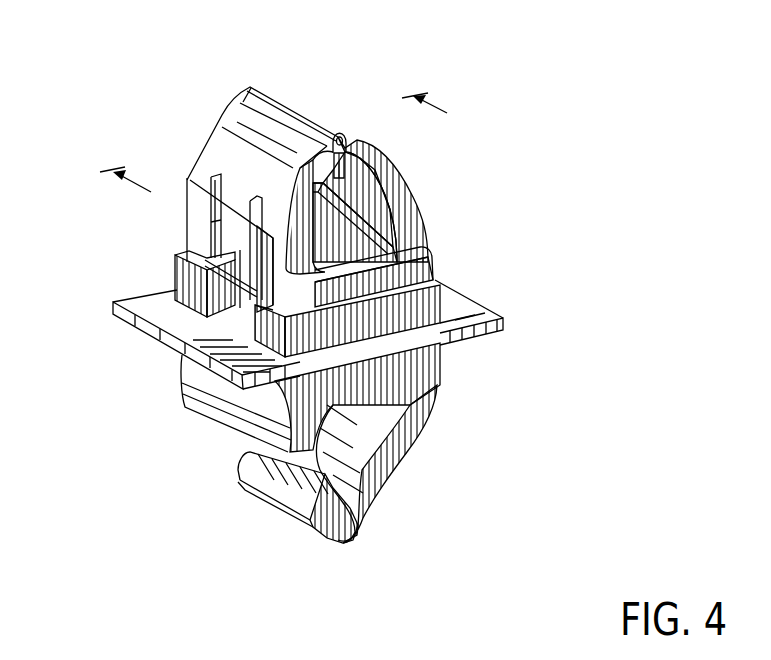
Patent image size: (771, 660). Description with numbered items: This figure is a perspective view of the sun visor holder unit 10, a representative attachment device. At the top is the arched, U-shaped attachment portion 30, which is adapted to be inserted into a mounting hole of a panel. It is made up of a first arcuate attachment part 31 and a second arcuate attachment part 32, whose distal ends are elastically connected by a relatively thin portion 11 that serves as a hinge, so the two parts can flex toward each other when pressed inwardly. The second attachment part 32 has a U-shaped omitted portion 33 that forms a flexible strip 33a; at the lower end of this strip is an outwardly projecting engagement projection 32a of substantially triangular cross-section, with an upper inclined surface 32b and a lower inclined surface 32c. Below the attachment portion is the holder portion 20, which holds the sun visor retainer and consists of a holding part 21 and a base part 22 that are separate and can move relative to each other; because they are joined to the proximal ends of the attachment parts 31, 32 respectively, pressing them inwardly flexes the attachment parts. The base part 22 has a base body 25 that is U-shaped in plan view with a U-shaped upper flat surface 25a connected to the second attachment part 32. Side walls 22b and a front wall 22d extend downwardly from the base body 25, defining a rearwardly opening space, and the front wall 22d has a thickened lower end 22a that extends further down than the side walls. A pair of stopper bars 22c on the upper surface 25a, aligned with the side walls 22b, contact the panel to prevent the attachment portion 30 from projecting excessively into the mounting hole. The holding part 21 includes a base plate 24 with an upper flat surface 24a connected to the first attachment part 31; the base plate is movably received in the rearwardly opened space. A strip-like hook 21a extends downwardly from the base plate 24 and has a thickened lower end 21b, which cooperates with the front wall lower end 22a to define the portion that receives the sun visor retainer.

The sun visor holder unit 10 is at (286, 88).
The thin portion 11 is at (307, 133).
The holder portion 20 is at (180, 414).
The holding part 21 is at (417, 438).
The hook 21a is at (395, 462).
The thickened lower end 21b is at (317, 463).
The base part 22 is at (357, 525).
The thickened lower end 22a is at (253, 497).
The side walls 22b is at (423, 370).
The stopper bars 22c is at (430, 320).
The front wall 22d is at (235, 412).
The base plate 24 is at (445, 312).
The upper flat surface 24a is at (457, 298).
The base body 25 is at (487, 313).
The upper flat surface 25a is at (135, 323).
The attachment portion 30 is at (438, 222).
The first arcuate attachment part 31 is at (405, 197).
The second arcuate attachment part 32 is at (210, 143).
The engagement projection 32a is at (240, 243).
The upper inclined surface 32b is at (248, 210).
The lower inclined surface 32c is at (190, 287).
The omitted portion 33 is at (205, 183).
The flexible strip 33a is at (210, 222).